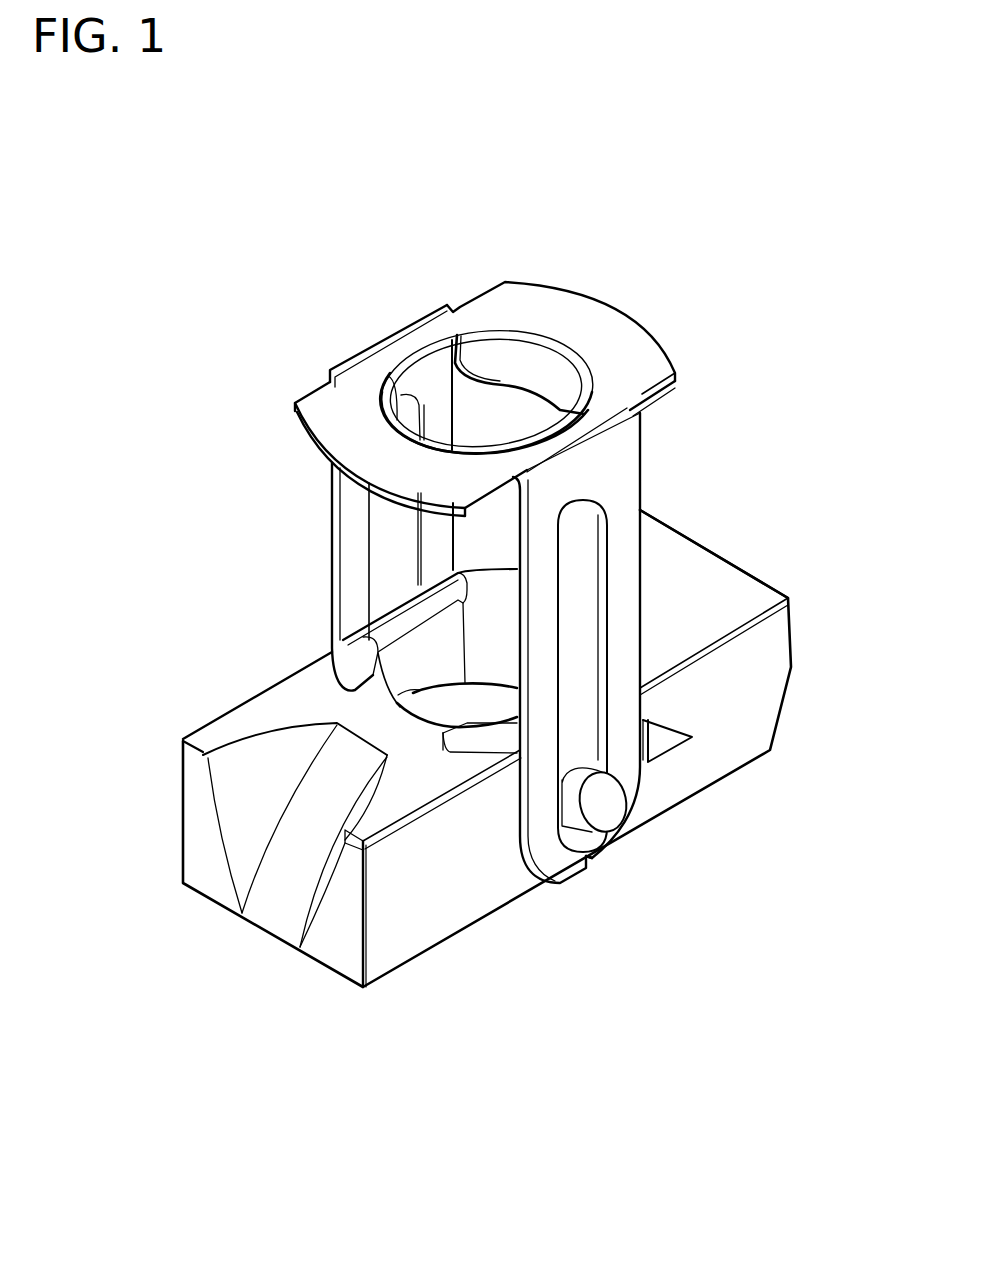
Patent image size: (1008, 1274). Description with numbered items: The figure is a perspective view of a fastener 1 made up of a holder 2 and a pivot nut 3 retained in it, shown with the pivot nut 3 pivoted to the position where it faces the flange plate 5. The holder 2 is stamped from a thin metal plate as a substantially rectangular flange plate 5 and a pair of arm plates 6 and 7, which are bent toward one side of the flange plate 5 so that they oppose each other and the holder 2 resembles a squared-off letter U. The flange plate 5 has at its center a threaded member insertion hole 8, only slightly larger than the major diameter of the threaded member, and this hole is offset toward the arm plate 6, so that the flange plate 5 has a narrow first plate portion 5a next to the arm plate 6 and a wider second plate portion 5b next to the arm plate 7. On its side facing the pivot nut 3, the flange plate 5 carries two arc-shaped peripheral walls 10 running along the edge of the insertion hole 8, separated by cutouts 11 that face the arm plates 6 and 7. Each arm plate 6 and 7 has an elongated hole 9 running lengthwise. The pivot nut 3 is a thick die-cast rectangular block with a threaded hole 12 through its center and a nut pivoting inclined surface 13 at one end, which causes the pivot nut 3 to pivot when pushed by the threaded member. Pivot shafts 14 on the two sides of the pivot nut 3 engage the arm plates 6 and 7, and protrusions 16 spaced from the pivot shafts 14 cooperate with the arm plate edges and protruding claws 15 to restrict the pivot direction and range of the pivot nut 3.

The fastener 1 is at (291, 426).
The holder 2 is at (605, 302).
The pivot nut 3 is at (743, 565).
The flange plate 5 is at (602, 325).
The first plate portion 5a is at (568, 438).
The second plate portion 5b is at (364, 372).
The arm plate 6 is at (622, 480).
The arm plate 7 is at (350, 517).
The threaded member insertion hole 8 is at (472, 398).
The elongated hole 9 is at (594, 562).
The arc-shaped peripheral wall 10 is at (528, 363).
The cutout 11 is at (460, 352).
The threaded hole 12 is at (430, 692).
The nut pivoting inclined surface 13 is at (283, 843).
The pivot shaft 14 is at (604, 803).
The protruding claw 15 is at (582, 866).
The protrusion 16 is at (662, 740).